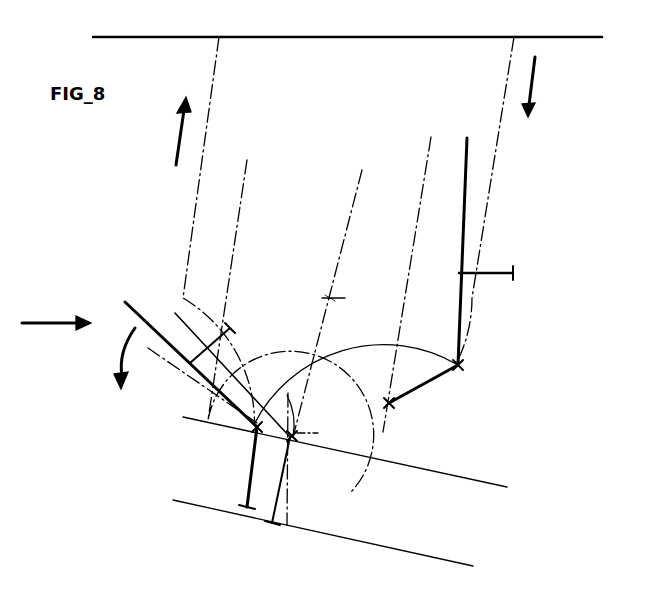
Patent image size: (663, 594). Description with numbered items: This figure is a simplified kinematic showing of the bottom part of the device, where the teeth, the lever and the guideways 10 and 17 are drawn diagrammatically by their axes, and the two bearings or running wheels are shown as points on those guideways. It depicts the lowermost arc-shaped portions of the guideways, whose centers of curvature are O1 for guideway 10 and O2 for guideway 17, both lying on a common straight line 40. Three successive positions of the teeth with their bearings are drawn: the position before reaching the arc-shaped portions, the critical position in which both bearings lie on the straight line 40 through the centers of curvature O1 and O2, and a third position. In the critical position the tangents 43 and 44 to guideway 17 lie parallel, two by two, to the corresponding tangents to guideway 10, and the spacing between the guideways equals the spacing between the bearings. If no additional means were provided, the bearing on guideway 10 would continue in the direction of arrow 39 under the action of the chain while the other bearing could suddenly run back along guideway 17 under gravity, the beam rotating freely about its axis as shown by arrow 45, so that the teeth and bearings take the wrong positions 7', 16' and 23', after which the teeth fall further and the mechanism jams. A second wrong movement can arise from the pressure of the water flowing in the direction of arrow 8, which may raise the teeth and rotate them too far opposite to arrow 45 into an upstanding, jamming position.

The guideway 10 is at (214, 62).
The arrow 39 is at (541, 61).
The guideway 17 is at (247, 184).
The axis through centers O1 and O2 40 is at (343, 238).
The teeth in wrong position 7' is at (202, 385).
The bearing in wrong position 23' is at (281, 451).
The bearing in wrong position 16' is at (315, 544).
The center of curvature O1 is at (337, 300).
The center of curvature O2 is at (298, 434).
The tangent 44 is at (455, 478).
The tangent 43 is at (445, 557).
The arrow 8 is at (44, 318).
The arrow 45 is at (118, 352).